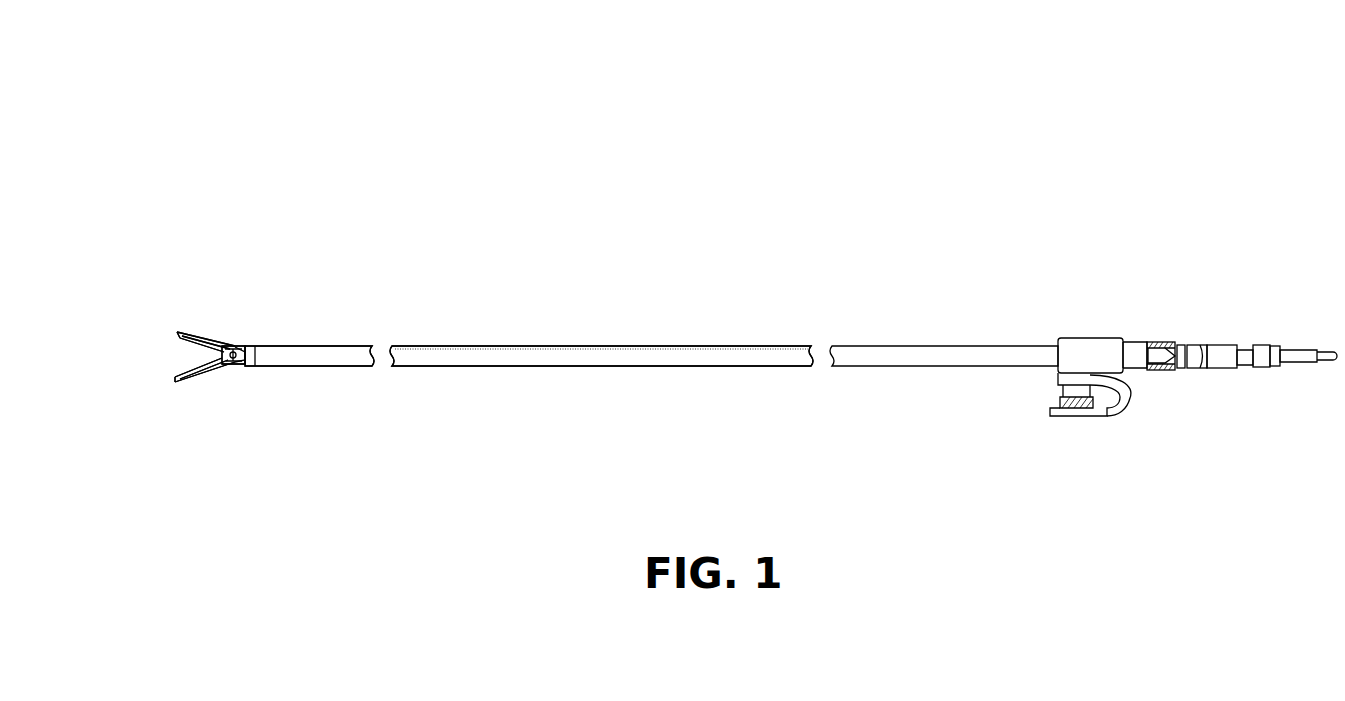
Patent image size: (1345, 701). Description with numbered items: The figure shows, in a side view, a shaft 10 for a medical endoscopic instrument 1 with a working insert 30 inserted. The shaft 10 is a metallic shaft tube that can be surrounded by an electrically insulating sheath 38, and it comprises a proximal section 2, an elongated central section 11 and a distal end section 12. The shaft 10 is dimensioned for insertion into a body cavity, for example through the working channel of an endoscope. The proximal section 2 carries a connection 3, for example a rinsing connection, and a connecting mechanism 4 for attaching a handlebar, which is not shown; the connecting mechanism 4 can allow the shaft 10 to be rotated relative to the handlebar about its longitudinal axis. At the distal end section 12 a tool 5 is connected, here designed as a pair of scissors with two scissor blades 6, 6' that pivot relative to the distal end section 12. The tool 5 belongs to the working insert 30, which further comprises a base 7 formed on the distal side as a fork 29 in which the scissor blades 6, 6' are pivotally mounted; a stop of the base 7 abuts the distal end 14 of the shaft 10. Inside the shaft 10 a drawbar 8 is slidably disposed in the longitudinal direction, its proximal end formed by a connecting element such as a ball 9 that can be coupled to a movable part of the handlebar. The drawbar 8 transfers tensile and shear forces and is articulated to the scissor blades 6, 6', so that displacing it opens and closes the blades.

The medical endoscopic instrument 1 is at (905, 148).
The proximal section 2 is at (1068, 308).
The connection 3 is at (1077, 408).
The connecting mechanism 4 is at (1165, 307).
The tool 5 is at (215, 405).
The scissor blade 6 is at (168, 322).
The scissor blade 6' is at (168, 386).
The base 7 is at (247, 367).
The drawbar 8 is at (1292, 335).
The ball 9 is at (1330, 362).
The shaft 10 is at (668, 200).
The elongated central section 11 is at (640, 330).
The distal end section 12 is at (268, 330).
The distal end 14 is at (257, 367).
The fork 29 is at (232, 345).
The working insert 30 is at (222, 275).
The electrically insulating sheath 38 is at (452, 358).